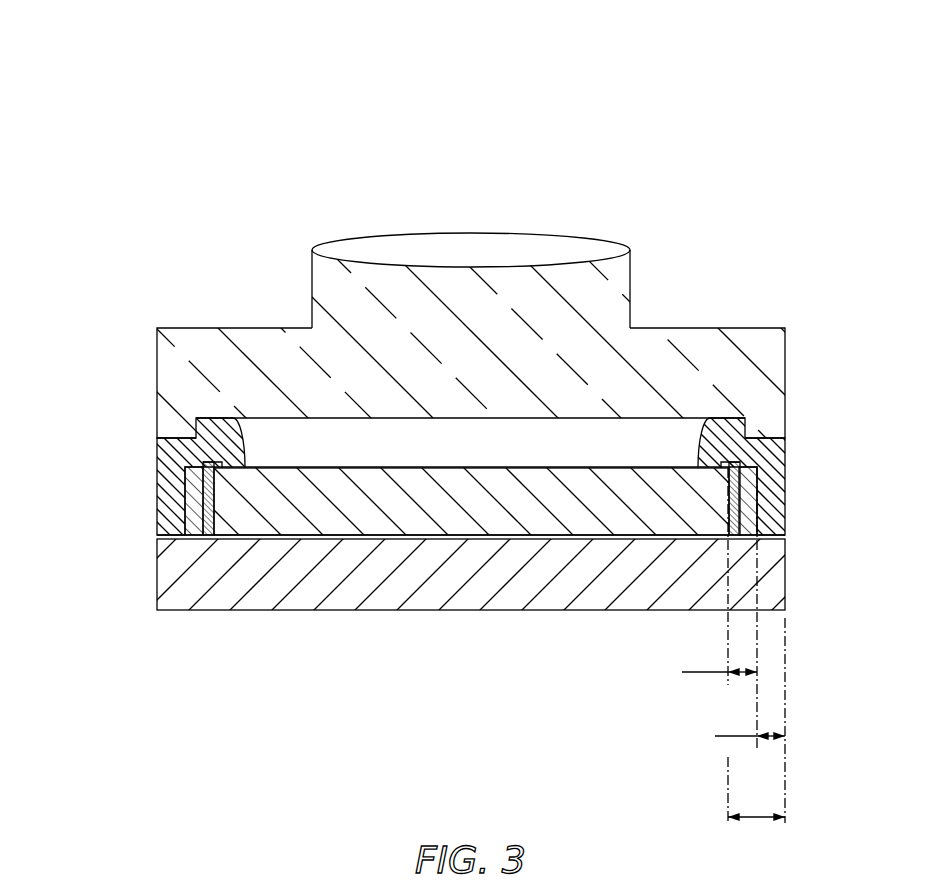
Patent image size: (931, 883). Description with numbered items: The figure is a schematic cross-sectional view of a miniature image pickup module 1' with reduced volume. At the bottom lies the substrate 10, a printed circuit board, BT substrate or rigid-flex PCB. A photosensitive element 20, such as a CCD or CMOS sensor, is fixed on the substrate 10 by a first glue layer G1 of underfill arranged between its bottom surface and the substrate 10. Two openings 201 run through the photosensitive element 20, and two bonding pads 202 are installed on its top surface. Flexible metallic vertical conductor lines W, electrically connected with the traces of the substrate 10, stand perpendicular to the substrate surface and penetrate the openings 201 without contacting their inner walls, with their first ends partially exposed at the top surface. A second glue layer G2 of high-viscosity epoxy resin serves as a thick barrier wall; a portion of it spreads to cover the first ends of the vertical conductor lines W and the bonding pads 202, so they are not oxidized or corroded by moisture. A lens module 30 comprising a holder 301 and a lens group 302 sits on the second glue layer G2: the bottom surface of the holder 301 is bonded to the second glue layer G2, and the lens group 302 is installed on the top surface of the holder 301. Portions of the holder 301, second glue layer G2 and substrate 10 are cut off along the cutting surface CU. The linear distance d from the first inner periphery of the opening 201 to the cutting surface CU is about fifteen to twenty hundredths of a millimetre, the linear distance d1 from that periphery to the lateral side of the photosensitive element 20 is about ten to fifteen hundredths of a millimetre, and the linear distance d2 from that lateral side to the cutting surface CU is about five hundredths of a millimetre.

The miniature image pickup module 1' is at (465, 420).
The cutting surface CU is at (802, 328).
The lens module 30 is at (130, 93).
The holder 301 is at (167, 358).
The lens group 302 is at (463, 248).
The substrate 10 is at (309, 594).
The photosensitive element 20 is at (427, 522).
The opening 201 is at (182, 497).
The bonding pad 202 is at (243, 455).
The first glue layer G1 is at (539, 545).
The second glue layer G2 is at (165, 455).
The vertical conductor line W is at (200, 520).
The linear distance d1 is at (719, 660).
The linear distance d2 is at (750, 725).
The linear distance d is at (756, 645).